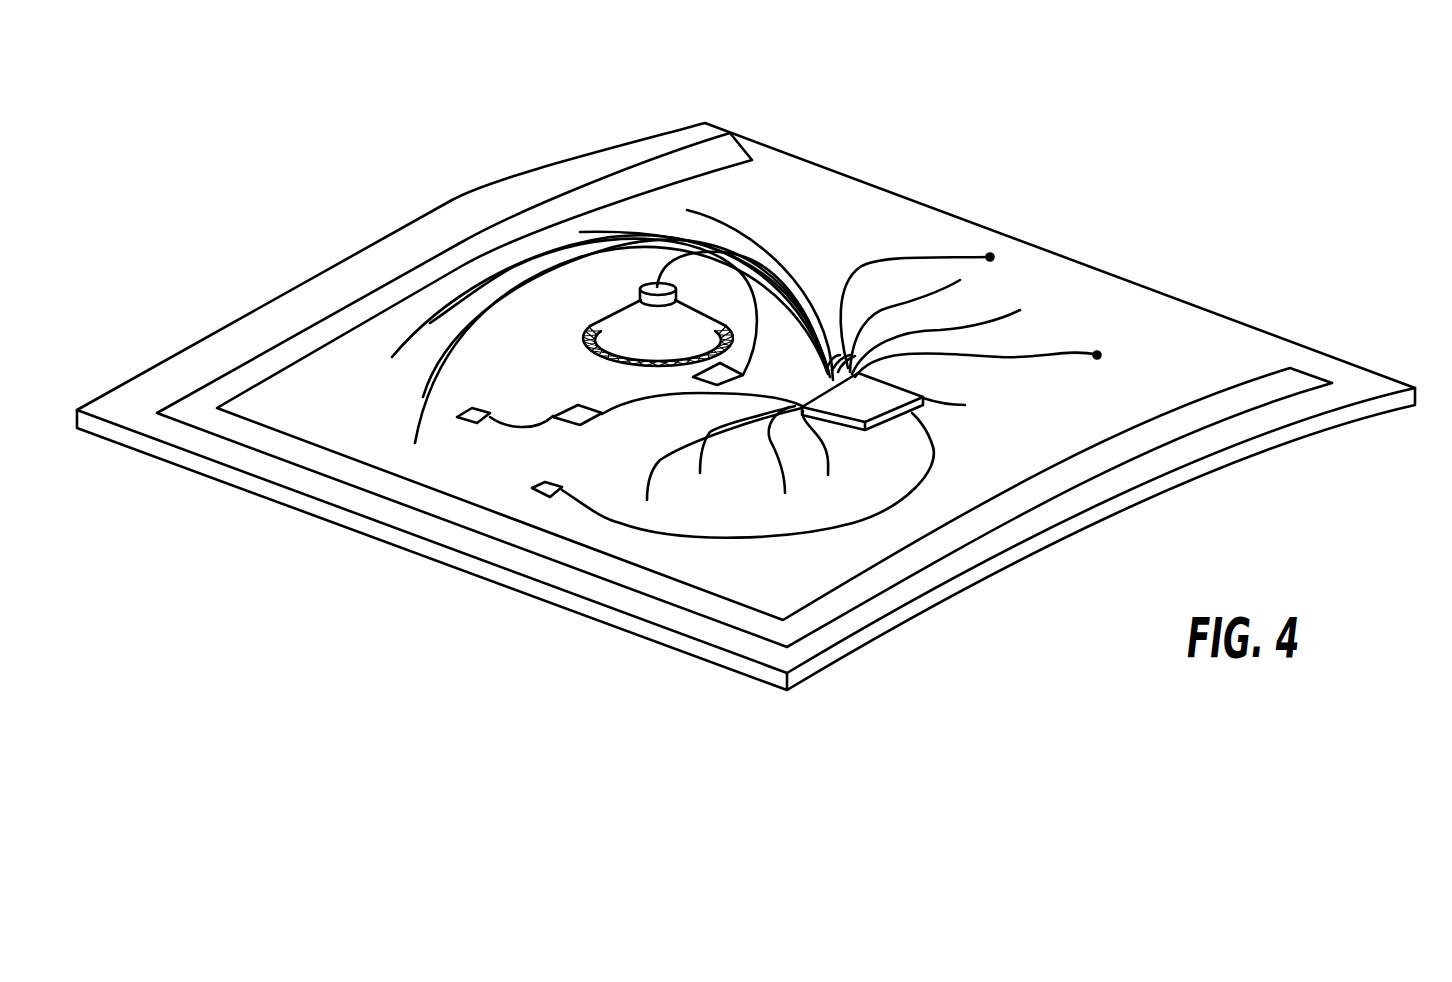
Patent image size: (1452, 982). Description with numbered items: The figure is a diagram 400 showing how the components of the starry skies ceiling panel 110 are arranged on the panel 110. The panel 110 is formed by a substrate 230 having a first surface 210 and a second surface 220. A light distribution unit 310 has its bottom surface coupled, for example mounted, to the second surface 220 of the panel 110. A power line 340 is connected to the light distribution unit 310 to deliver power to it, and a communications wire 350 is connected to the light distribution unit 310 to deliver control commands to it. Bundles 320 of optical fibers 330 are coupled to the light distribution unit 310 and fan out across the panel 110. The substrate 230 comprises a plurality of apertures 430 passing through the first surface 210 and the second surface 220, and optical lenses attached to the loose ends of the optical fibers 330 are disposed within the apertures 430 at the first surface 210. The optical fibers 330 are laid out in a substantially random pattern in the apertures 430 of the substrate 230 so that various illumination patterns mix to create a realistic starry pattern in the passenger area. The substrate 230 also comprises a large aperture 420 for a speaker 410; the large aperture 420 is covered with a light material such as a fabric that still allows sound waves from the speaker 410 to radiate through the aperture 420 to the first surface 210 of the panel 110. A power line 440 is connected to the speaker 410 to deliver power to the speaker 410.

The panel 110 is at (903, 643).
The first surface 210 is at (567, 653).
The second surface 220 is at (832, 211).
The substrate 230 is at (1422, 397).
The light distribution unit 310 is at (875, 404).
The bundles 320 is at (862, 356).
The optical fibers 330 is at (720, 226).
The power line 340 is at (925, 402).
The communications wire 350 is at (905, 432).
The diagram 400 is at (301, 575).
The speaker 410 is at (647, 322).
The large aperture 420 is at (593, 352).
The apertures 430 is at (990, 255).
The power line 440 is at (513, 432).